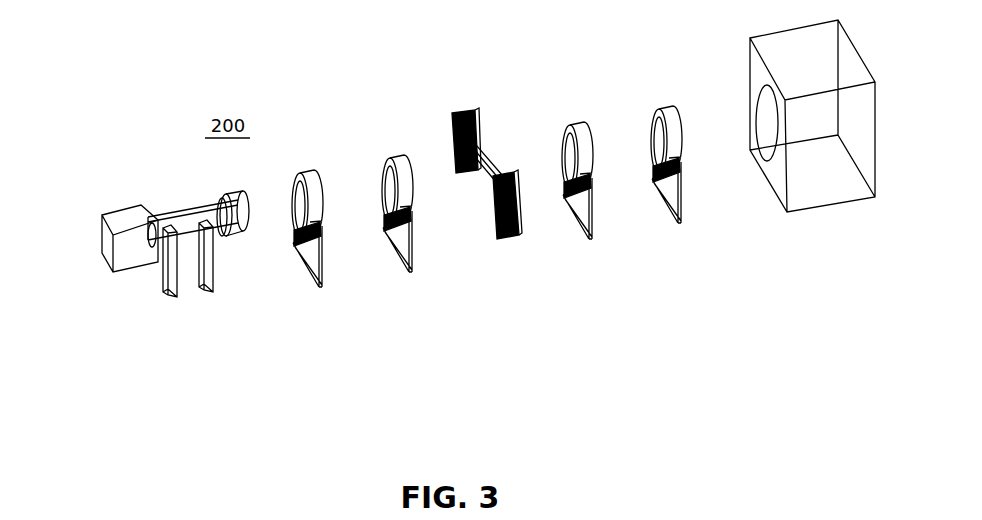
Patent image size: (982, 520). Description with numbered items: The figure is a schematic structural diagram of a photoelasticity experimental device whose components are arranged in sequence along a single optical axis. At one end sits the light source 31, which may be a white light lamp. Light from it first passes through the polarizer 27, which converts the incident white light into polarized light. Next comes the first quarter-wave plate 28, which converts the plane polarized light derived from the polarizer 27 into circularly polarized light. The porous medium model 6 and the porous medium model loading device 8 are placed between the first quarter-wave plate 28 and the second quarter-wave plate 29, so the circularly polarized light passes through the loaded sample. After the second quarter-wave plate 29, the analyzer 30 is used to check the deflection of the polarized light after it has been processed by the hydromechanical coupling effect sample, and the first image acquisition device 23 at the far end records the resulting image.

The first image acquisition device 23 is at (128, 258).
The analyzer 30 is at (302, 235).
The second quarter-wave plate 29 is at (392, 228).
The porous medium model 6 is at (489, 193).
The porous medium model loading device 8 is at (508, 174).
The first quarter-wave plate 28 is at (565, 198).
The polarizer 27 is at (657, 188).
The light source 31 is at (770, 158).